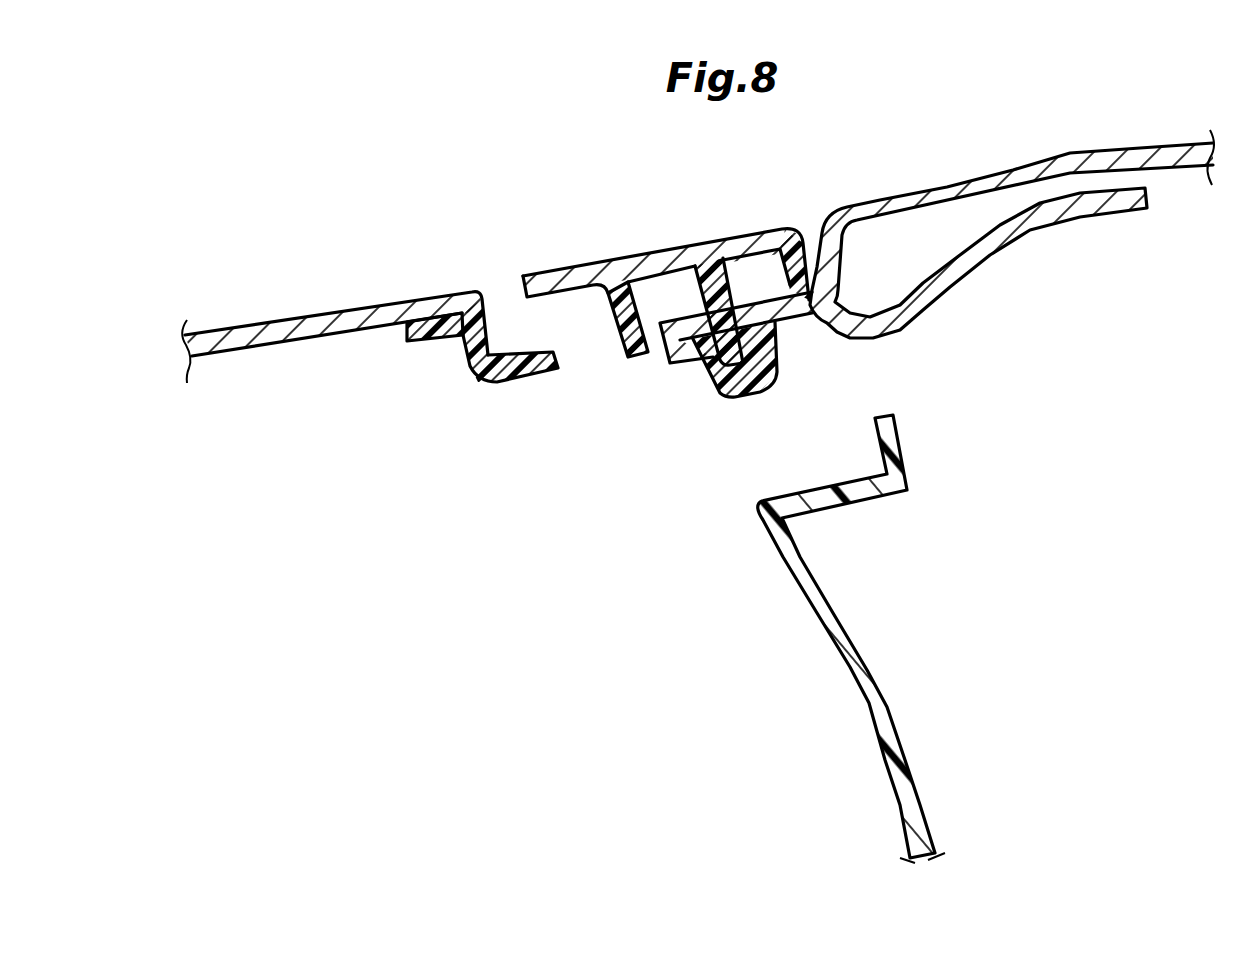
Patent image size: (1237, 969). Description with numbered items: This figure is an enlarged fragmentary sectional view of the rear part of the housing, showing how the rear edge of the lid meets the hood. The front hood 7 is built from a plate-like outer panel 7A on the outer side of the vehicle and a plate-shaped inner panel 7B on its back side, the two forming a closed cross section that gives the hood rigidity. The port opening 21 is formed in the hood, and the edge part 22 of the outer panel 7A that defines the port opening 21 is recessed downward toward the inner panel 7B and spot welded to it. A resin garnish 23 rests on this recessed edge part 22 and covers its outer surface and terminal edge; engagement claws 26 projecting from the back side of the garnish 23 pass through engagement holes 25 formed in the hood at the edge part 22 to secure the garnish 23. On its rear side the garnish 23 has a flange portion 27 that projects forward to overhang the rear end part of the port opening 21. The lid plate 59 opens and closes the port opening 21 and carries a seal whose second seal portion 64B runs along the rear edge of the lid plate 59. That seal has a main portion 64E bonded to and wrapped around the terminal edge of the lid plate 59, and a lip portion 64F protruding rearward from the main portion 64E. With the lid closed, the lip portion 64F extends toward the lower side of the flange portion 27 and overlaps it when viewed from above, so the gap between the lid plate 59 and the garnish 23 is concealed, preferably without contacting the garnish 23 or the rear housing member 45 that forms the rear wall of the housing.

The front hood 7 is at (1150, 150).
The outer panel 7A is at (970, 185).
The inner panel 7B is at (1083, 204).
The port opening 21 is at (660, 364).
The edge part 22 is at (768, 300).
The garnish 23 is at (627, 258).
The engagement hole 25 is at (698, 292).
The engagement claw 26 is at (747, 376).
The flange portion 27 is at (568, 274).
The rear housing member 45 is at (880, 668).
The lid plate 59 is at (302, 330).
The second seal portion 64B is at (395, 356).
The main portion 64E is at (447, 342).
The lip portion 64F is at (525, 372).